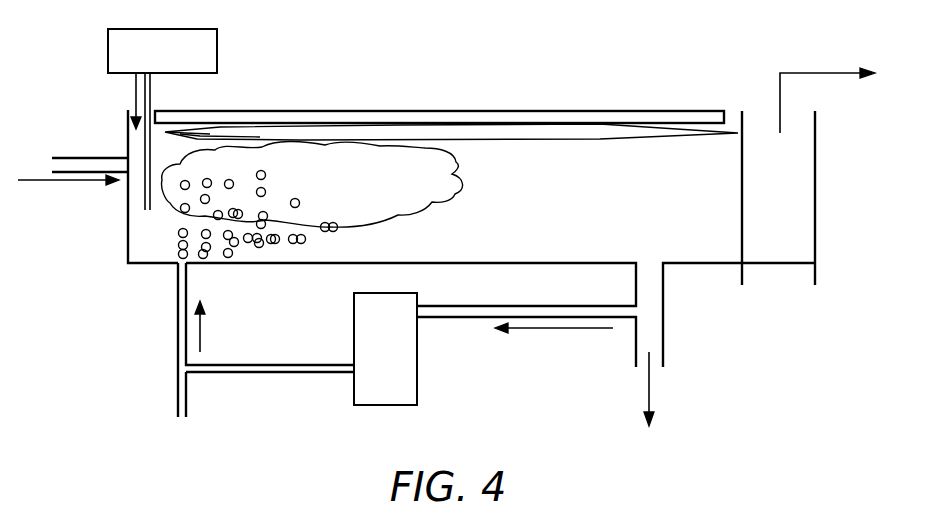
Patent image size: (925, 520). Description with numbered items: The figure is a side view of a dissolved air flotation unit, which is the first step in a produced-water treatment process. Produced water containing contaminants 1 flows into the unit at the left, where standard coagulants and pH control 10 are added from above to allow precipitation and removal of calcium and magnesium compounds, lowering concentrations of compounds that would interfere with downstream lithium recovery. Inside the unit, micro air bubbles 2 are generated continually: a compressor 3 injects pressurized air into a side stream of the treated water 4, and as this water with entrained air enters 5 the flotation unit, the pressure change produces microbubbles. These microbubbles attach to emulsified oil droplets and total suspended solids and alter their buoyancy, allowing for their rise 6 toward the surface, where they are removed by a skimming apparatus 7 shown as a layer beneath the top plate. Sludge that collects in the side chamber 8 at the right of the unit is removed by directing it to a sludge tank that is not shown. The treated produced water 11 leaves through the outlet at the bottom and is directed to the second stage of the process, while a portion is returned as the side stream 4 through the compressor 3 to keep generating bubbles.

The produced water containing contaminants 1 is at (70, 182).
The micro air bubbles 2 is at (311, 237).
The compressor 3 is at (385, 349).
The side stream of the treated water 4 is at (553, 328).
The entry of water with entrained air 5 is at (200, 328).
The rise of oil droplets and suspended solids 6 is at (472, 174).
The skimming apparatus 7 is at (600, 150).
The side chamber 8 is at (827, 72).
The coagulants and pH control 10 is at (162, 119).
The treated produced water 11 is at (649, 388).